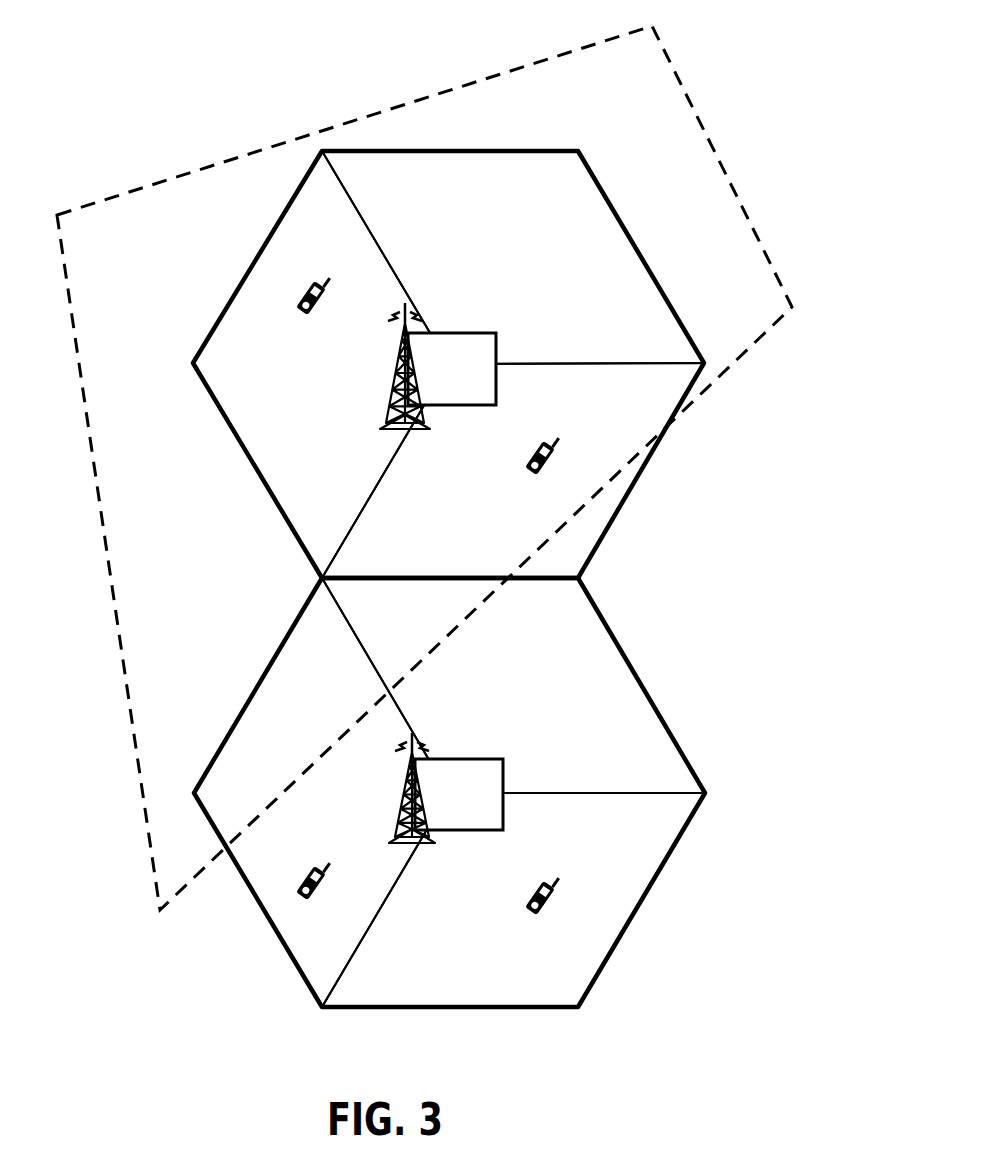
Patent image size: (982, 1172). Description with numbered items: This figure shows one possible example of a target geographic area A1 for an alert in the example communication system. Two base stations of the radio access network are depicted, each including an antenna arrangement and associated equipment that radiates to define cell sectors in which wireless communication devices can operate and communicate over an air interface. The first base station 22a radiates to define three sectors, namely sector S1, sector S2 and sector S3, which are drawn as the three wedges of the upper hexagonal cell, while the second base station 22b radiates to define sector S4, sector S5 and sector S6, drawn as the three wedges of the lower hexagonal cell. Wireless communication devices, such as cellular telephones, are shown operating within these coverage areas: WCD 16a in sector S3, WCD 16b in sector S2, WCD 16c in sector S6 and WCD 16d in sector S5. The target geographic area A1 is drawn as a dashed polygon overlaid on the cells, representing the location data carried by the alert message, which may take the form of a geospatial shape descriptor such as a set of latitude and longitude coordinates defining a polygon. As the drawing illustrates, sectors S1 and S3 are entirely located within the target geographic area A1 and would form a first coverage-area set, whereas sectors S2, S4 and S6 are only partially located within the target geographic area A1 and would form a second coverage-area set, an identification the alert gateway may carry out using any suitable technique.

The wireless communication device 16a is at (304, 310).
The wireless communication device 16b is at (533, 470).
The wireless communication device 16c is at (304, 895).
The wireless communication device 16d is at (533, 910).
The first base station 22a is at (438, 366).
The second base station 22b is at (446, 788).
The sector S1 is at (513, 257).
The sector S2 is at (513, 470).
The sector S3 is at (321, 364).
The sector S4 is at (513, 685).
The sector S5 is at (513, 900).
The sector S6 is at (321, 792).
The target geographic area A1 is at (424, 468).